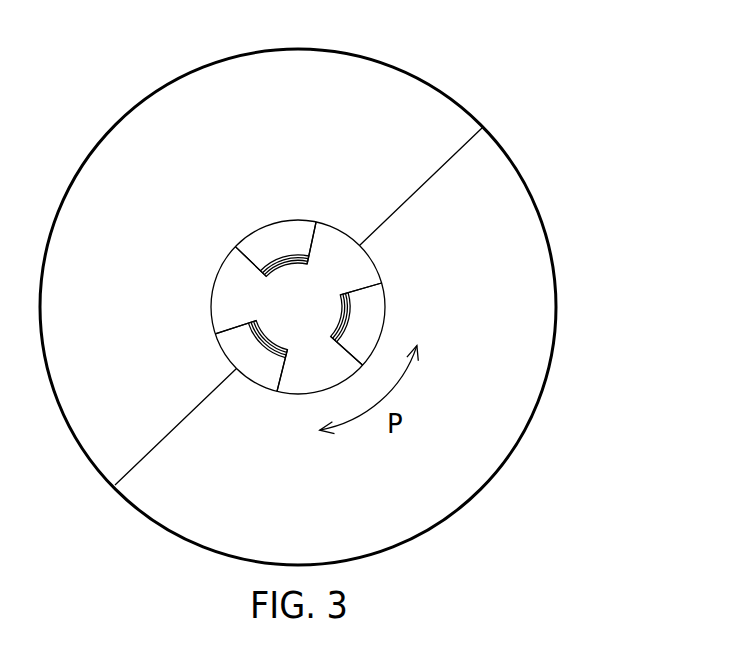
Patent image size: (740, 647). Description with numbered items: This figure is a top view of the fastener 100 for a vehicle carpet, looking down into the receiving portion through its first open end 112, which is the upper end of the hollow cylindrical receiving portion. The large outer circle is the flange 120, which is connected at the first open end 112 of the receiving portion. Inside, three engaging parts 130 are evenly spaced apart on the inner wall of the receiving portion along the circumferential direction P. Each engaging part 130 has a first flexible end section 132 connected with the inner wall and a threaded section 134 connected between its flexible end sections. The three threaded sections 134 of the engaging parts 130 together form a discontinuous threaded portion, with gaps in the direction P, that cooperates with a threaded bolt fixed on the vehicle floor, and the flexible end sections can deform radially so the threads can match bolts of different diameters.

The fastener 100 is at (531, 48).
The flange 120 is at (533, 293).
The first open end 112 is at (200, 274).
The engaging parts 130 is at (229, 327).
The first flexible end section 132 is at (300, 237).
The threaded section 134 is at (278, 250).